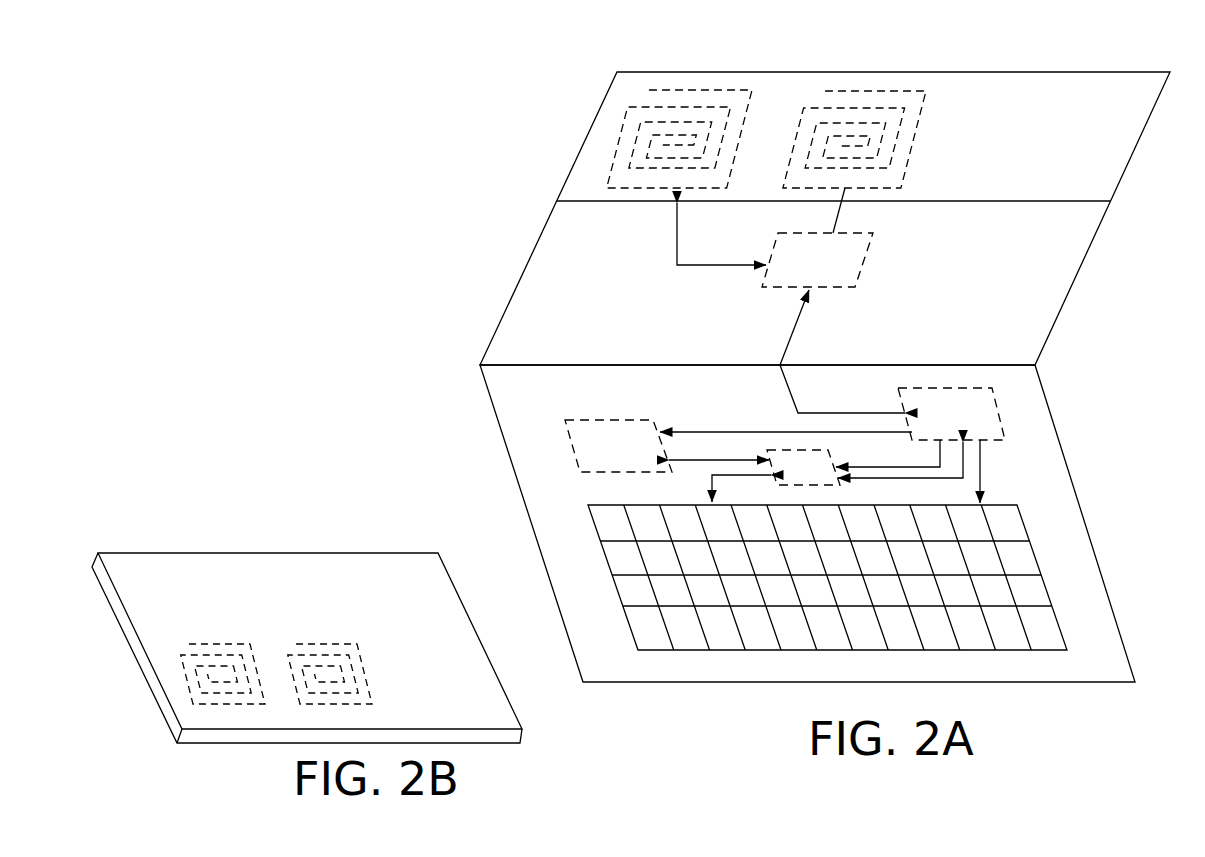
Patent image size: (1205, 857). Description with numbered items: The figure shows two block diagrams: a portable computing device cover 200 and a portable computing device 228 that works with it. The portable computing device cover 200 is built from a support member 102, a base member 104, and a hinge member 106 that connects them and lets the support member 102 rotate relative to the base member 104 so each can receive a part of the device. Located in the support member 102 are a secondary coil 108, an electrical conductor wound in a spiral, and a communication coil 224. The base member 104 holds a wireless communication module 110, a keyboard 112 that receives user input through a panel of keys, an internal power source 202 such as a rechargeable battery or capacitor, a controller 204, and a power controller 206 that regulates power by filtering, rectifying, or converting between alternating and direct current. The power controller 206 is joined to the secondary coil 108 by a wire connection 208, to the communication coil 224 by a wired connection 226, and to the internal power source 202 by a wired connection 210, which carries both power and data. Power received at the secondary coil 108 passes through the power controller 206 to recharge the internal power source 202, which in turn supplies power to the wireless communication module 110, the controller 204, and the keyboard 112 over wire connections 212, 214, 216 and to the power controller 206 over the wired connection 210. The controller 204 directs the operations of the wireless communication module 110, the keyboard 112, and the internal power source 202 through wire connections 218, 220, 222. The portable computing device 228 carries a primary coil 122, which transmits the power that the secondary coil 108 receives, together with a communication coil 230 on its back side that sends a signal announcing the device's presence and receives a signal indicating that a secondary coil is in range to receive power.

In FIG. 2A, the portable computing device cover 200 is at (508, 91).
In FIG. 2A, the support member 102 is at (695, 72).
In FIG. 2A, the communication coil 224 is at (597, 160).
In FIG. 2A, the secondary coil 108 is at (959, 150).
In FIG. 2A, the wired connection 226 is at (677, 258).
In FIG. 2A, the wire connection 208 is at (838, 222).
In FIG. 2A, the power controller 206 is at (868, 255).
In FIG. 2A, the wired connection 210 is at (797, 332).
In FIG. 2A, the hinge member 106 is at (607, 365).
In FIG. 2A, the wireless communication module 110 is at (601, 420).
In FIG. 2A, the wire connection 212 is at (697, 432).
In FIG. 2A, the wire connection 218 is at (692, 460).
In FIG. 2A, the internal power source 202 is at (1003, 415).
In FIG. 2A, the wire connection 214 is at (862, 466).
In FIG. 2A, the wire connection 216 is at (982, 472).
In FIG. 2A, the base member 104 is at (1072, 480).
In FIG. 2A, the wire connection 220 is at (710, 486).
In FIG. 2A, the controller 204 is at (808, 485).
In FIG. 2A, the wire connection 222 is at (888, 480).
In FIG. 2A, the keyboard 112 is at (910, 651).
In FIG. 2B, the portable computing device 228 is at (107, 528).
In FIG. 2B, the communication coil 230 is at (176, 668).
In FIG. 2B, the primary coil 122 is at (368, 650).